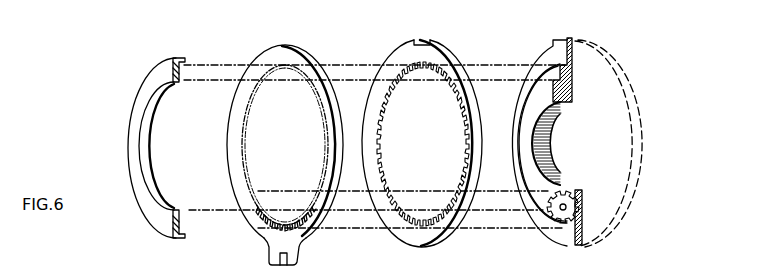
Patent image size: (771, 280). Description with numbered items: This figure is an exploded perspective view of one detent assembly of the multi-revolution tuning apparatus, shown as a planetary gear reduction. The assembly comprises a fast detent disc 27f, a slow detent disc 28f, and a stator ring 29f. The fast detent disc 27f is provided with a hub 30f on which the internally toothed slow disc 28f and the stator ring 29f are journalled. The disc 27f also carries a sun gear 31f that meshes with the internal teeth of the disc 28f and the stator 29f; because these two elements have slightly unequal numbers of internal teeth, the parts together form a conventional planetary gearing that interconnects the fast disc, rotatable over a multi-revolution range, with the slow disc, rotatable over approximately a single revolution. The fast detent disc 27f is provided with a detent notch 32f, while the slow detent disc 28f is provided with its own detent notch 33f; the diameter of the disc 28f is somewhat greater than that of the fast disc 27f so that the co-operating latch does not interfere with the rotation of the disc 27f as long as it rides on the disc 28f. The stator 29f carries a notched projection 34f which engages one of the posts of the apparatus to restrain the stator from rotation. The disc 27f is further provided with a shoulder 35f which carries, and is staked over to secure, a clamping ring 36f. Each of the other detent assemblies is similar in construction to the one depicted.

The clamping ring 36f is at (164, 66).
The stator ring 29f is at (301, 58).
The notched projection 34f is at (275, 249).
The detent notch 33f is at (424, 39).
The slow detent disc 28f is at (450, 62).
The detent notch 32f is at (545, 45).
The fast detent disc 27f is at (576, 44).
The hub 30f is at (605, 58).
The shoulder 35f is at (568, 108).
The sun gear 31f is at (574, 189).